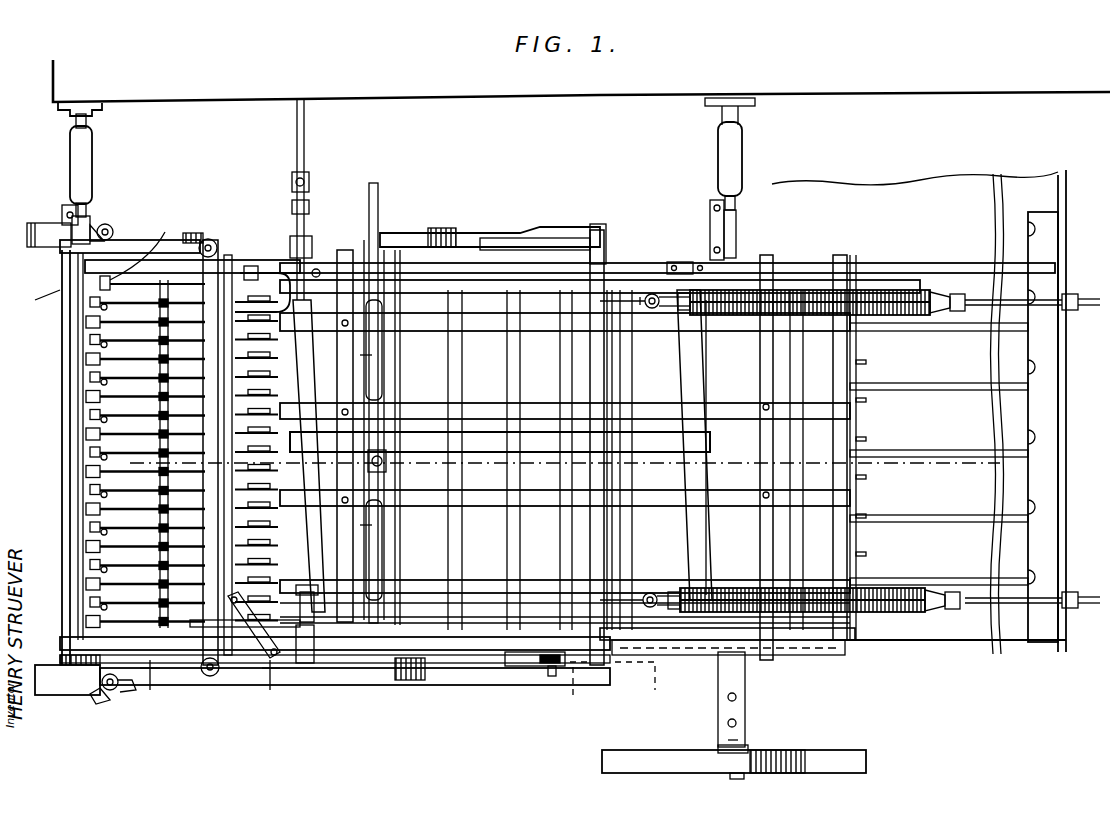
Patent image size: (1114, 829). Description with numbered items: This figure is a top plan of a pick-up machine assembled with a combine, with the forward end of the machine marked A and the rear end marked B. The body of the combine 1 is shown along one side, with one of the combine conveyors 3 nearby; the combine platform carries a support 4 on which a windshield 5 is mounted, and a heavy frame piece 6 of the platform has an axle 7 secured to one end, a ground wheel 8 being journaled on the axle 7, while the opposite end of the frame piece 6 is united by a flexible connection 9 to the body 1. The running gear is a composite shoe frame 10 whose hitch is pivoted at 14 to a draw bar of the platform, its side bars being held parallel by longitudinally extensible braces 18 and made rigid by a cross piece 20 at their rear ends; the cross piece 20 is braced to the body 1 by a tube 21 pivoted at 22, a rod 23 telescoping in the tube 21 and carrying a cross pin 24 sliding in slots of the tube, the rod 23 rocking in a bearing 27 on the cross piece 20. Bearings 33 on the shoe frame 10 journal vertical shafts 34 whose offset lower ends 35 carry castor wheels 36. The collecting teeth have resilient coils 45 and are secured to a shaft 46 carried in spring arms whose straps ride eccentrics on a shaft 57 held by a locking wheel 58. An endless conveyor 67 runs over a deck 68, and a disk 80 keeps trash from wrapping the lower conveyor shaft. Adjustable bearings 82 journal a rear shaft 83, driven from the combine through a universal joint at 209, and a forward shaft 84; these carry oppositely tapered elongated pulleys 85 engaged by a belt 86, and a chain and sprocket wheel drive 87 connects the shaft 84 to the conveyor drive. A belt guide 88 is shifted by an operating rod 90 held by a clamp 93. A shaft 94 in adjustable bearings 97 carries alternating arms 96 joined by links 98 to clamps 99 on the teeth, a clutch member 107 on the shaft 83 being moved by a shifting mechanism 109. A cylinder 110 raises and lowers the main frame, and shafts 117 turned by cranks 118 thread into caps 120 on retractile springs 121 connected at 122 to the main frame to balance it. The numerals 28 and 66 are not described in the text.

The body of the combine 1 is at (228, 118).
The conveyor of the combine 3 is at (950, 280).
The support 4 is at (1072, 292).
The windshield 5 is at (1040, 420).
The frame piece of the combine platform 6 is at (27, 236).
The axle 7 is at (745, 712).
The ground wheel 8 is at (858, 757).
The flexible connection 9 is at (742, 150).
The shoe frame 10 is at (212, 684).
The pivot of hitch to draw bar 14 is at (359, 442).
The longitudinally extensible braces 18 is at (545, 238).
The cross piece 20 is at (64, 315).
The tube 21 is at (92, 140).
The pivotal connection of tube 22 is at (68, 112).
The rod 23 is at (92, 218).
The cross pin 24 is at (92, 168).
The bearing 27 is at (62, 212).
The slide rail 28 is at (432, 216).
The bearings 33 is at (128, 692).
The vertical shafts 34 is at (114, 226).
The offset lower ends 35 is at (96, 706).
The castor wheels 36 is at (60, 662).
The coils 45 is at (270, 500).
The shaft 46 is at (300, 580).
The shaft 57 is at (552, 676).
The locking wheel 58 is at (540, 668).
The pipe 66 is at (248, 265).
The endless conveyor 67 is at (468, 402).
The deck 68 is at (481, 536).
The disk 80 is at (188, 620).
The adjustable bearings 82 is at (710, 236).
The rear shaft 83 is at (294, 225).
The forward shaft 84 is at (675, 258).
The oppositely-tapered elongated pulleys 85 is at (300, 392).
The belt 86 is at (710, 440).
The chain and sprocket wheel drive 87 is at (815, 658).
The belt guide 88 is at (386, 461).
The operating rod 90 is at (378, 205).
The clamp 93 is at (366, 240).
The shaft 94 is at (84, 372).
The arms 96 is at (125, 320).
The adjustable bearings 97 is at (142, 215).
The links 98 is at (112, 282).
The clamps 99 is at (168, 305).
The clutch member 107 is at (320, 600).
The shifting mechanism 109 is at (252, 598).
The cylinder 110 is at (203, 242).
The shafts 117 is at (958, 308).
The cranks 118 is at (1088, 308).
The caps 120 is at (935, 315).
The retractile springs 121 is at (745, 316).
The connection of springs to main frame 122 is at (655, 320).
The universal joint connection 209 is at (309, 178).
The forward end A is at (1066, 172).
The rear end B is at (35, 296).